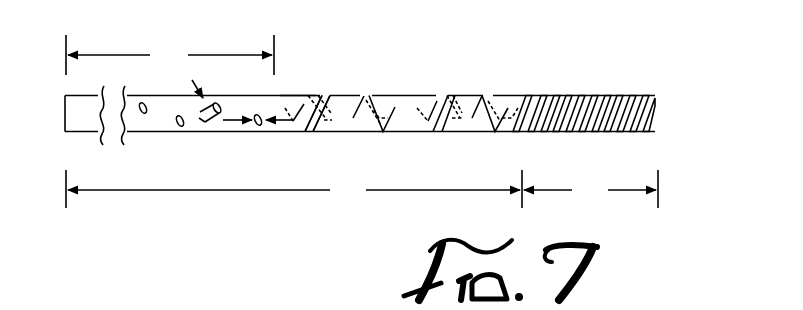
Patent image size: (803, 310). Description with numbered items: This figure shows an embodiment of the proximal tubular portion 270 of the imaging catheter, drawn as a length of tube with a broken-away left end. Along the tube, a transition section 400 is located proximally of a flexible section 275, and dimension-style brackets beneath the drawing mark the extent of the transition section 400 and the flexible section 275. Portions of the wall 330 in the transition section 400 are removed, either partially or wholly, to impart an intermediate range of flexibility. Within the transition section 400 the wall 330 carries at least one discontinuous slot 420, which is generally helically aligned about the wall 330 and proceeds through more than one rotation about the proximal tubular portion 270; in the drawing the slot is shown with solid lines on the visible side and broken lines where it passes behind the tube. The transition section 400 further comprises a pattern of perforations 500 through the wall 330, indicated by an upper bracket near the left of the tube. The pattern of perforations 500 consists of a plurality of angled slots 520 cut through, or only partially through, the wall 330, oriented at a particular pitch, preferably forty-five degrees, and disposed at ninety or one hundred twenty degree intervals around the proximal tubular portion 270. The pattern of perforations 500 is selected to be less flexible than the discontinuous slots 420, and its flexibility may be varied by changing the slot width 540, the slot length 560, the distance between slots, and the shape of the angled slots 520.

The proximal tubular portion 270 is at (412, 62).
The wall 330 is at (296, 94).
The discontinuous slot 420 is at (316, 94).
The angled slot 520 is at (178, 126).
The slot length 560 is at (212, 127).
The slot width 540 is at (288, 124).
The pattern of perforations 500 is at (170, 55).
The transition section 400 is at (294, 189).
The flexible section 275 is at (591, 189).